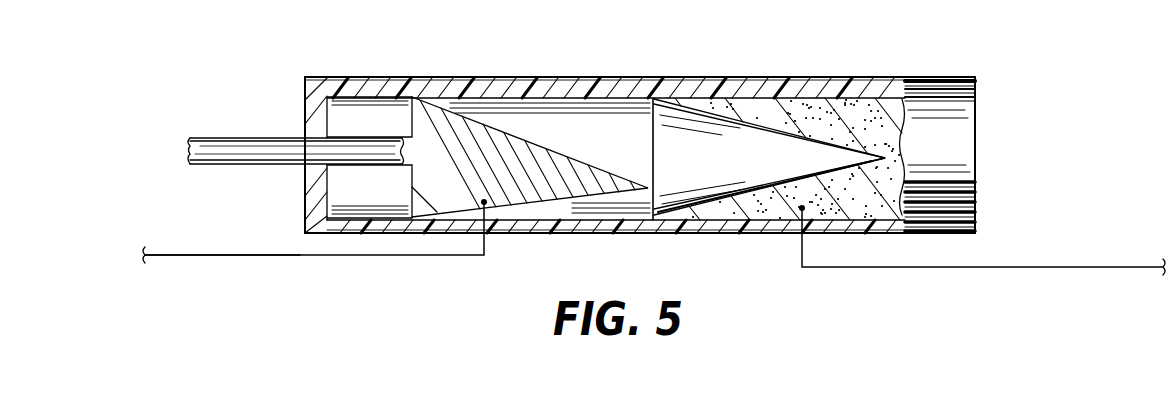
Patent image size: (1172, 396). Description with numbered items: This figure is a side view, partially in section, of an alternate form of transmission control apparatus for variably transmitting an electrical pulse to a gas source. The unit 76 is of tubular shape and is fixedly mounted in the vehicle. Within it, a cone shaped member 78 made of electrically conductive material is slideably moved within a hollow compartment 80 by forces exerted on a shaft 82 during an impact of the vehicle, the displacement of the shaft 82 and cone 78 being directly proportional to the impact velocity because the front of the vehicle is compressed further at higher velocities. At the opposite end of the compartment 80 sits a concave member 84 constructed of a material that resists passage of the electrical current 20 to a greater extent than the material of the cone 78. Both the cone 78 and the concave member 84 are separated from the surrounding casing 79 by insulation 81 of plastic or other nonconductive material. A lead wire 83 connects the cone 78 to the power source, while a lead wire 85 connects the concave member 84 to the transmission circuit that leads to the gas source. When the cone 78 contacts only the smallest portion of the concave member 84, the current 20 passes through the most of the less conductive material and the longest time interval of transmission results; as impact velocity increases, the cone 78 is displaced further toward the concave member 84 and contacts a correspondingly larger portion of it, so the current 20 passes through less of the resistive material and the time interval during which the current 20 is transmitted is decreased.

The unit 76 is at (198, 88).
The cone shaped member 78 is at (486, 130).
The casing 79 is at (702, 77).
The hollow compartment 80 is at (593, 127).
The insulation 81 is at (850, 93).
The shaft 82 is at (248, 138).
The lead wire 83 is at (350, 255).
The concave member 84 is at (787, 107).
The lead wire 85 is at (960, 268).
The electrical current 20 is at (235, 253).